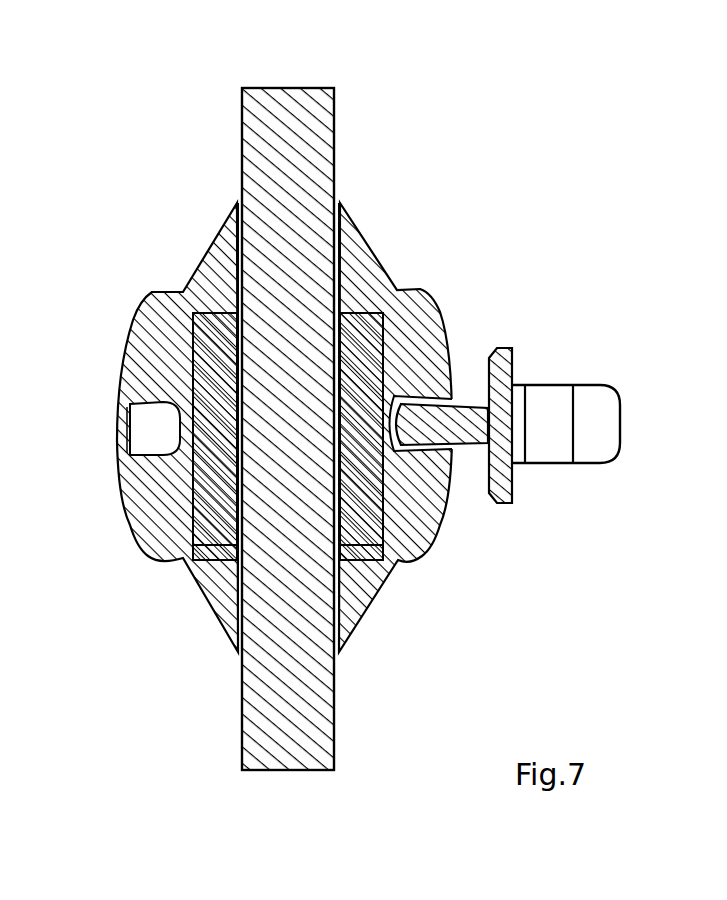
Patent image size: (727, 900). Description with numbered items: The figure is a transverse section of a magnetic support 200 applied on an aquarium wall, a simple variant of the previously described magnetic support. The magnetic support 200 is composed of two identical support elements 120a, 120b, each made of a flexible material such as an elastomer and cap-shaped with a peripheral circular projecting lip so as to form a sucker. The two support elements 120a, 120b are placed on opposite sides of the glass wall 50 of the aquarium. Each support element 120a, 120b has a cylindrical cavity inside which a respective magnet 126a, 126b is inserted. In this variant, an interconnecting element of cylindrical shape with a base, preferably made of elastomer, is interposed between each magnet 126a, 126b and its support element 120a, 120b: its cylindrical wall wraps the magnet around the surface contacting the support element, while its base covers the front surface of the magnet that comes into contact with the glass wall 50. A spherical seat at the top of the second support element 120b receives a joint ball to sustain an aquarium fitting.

The magnetic support 200 is at (487, 96).
The glass wall 50 is at (243, 148).
The first support element 120a is at (207, 264).
The second support element 120b is at (366, 245).
The first magnet 126a is at (186, 552).
The second magnet 126b is at (398, 548).